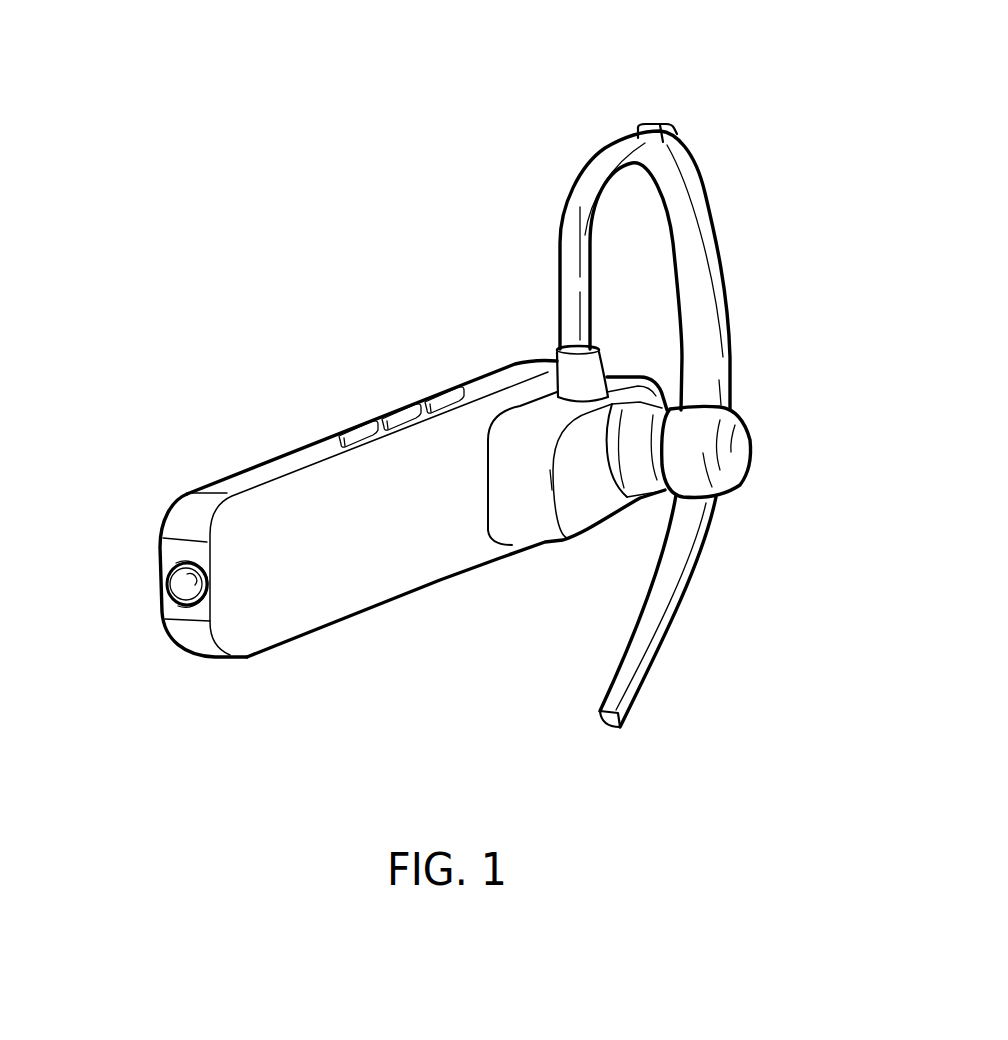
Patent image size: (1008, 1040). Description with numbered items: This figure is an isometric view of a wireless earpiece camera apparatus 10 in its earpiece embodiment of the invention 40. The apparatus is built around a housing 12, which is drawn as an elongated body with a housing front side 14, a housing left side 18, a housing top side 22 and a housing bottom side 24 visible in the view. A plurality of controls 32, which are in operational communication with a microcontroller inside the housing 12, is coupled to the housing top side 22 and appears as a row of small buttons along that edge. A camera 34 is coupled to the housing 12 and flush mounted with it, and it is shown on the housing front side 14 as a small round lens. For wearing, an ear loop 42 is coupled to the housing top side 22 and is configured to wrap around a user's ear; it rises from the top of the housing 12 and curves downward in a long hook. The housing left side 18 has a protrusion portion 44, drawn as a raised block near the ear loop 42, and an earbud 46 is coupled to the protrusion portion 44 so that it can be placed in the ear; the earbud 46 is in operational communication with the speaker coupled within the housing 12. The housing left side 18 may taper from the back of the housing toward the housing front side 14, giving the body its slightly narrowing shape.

The wireless earpiece camera apparatus 10 is at (829, 97).
The housing 12 is at (261, 626).
The housing front side 14 is at (197, 620).
The housing left side 18 is at (402, 557).
The housing top side 22 is at (274, 470).
The housing bottom side 24 is at (340, 630).
The plurality of controls 32 is at (440, 405).
The camera 34 is at (167, 588).
The earpiece embodiment of the invention 40 is at (260, 134).
The ear loop 42 is at (695, 258).
The protrusion portion 44 is at (525, 515).
The earbud 46 is at (712, 446).